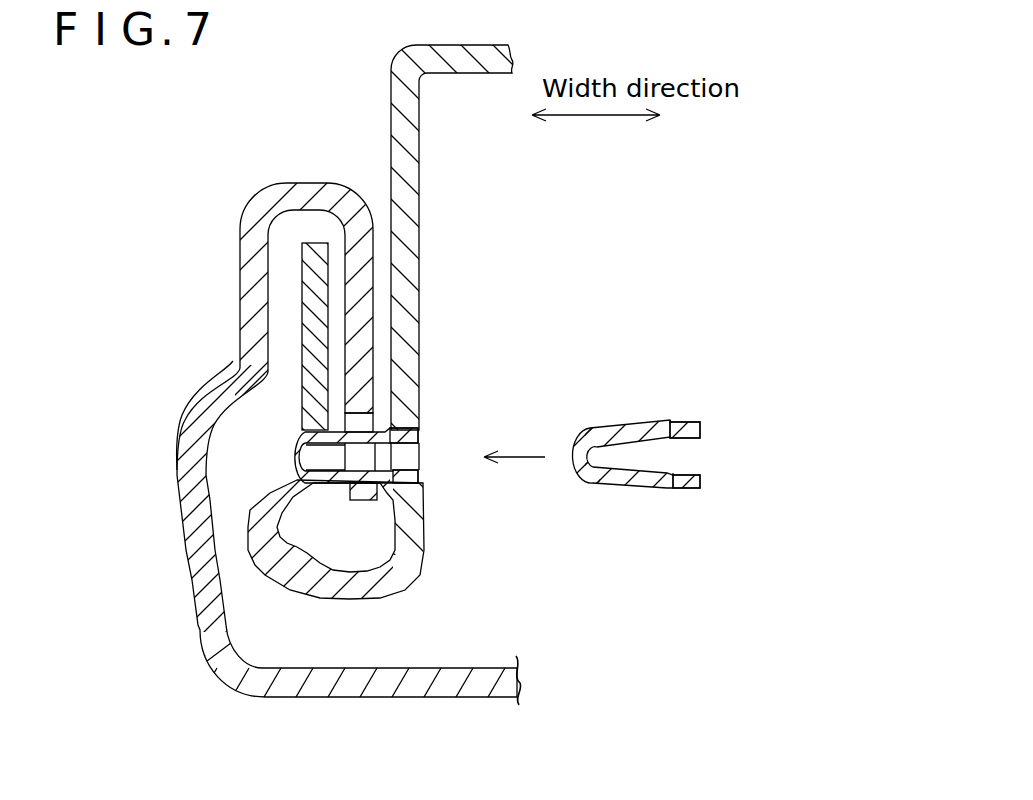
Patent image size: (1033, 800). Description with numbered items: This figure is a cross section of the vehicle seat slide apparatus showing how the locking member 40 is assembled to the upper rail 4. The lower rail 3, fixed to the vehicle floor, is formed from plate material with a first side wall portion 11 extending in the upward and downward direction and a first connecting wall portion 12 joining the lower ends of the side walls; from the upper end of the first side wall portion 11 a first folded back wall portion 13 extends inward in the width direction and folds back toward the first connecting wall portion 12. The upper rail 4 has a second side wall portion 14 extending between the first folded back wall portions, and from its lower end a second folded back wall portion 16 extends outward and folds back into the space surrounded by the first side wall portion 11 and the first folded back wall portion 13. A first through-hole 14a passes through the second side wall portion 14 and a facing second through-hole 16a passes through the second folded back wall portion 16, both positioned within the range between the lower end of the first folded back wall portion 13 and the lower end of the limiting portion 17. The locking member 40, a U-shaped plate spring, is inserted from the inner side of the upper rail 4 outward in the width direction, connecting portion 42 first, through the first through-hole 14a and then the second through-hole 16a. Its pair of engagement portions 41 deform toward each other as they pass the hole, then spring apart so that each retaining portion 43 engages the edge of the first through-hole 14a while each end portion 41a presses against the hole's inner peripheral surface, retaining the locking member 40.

The lower rail 3 is at (307, 697).
The upper rail 4 is at (408, 65).
The first side wall portion 11 is at (180, 502).
The first connecting wall portion 12 is at (435, 697).
The first folded back wall portion 13 is at (366, 244).
The second side wall portion 14 is at (390, 145).
The first through-hole 14a is at (417, 432).
The second folded back wall portion 16 is at (302, 266).
The second through-hole 16a is at (277, 444).
The limiting portion 17 is at (362, 503).
The locking member 40 is at (297, 432).
The engagement portion 41 is at (640, 427).
The end portion 41a is at (700, 430).
The connecting portion 42 is at (572, 473).
The retaining portion 43 is at (393, 427).